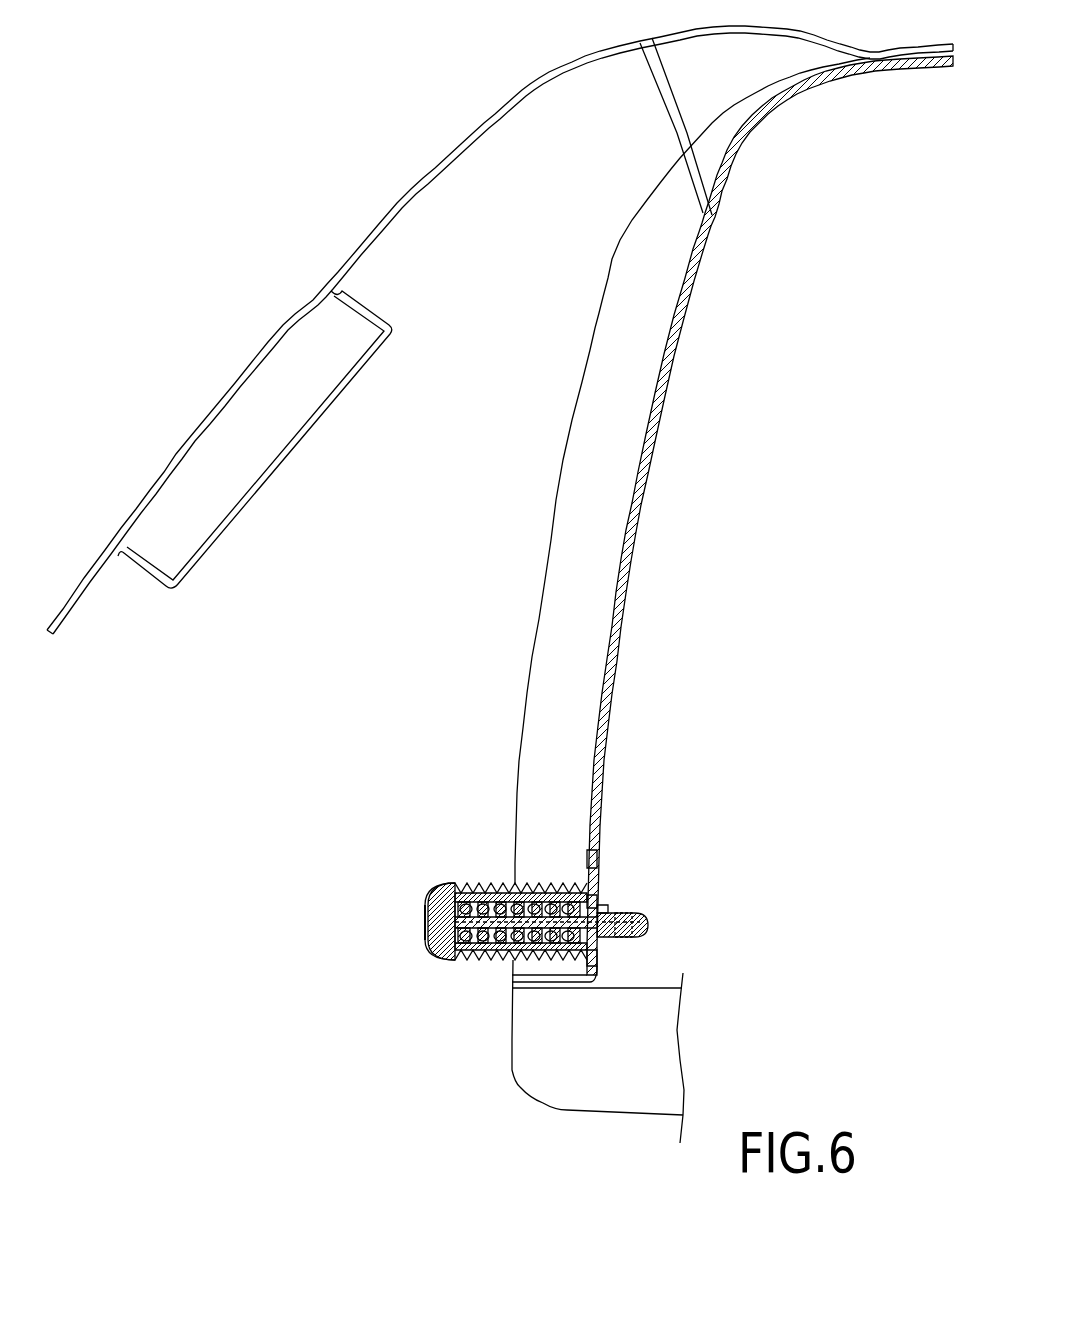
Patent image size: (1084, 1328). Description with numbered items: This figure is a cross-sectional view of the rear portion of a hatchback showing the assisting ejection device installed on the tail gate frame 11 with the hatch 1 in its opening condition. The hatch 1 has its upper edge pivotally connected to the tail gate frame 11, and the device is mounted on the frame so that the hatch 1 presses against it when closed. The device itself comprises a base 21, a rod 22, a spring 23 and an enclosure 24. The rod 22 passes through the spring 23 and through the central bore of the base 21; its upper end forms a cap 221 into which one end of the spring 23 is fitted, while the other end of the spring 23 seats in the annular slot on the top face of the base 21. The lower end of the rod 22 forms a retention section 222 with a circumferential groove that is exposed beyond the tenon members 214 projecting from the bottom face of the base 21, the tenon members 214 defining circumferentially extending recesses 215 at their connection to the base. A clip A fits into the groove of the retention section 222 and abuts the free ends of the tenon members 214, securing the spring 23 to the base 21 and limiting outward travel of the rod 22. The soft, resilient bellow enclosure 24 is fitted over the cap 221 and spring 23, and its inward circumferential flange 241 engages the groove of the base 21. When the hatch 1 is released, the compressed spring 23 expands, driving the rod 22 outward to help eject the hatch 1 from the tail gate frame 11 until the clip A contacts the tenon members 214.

The hatch 1 is at (190, 438).
The tail gate frame 11 is at (638, 513).
The base 21 is at (599, 962).
The rod 22 is at (502, 950).
The spring 23 is at (467, 950).
The enclosure 24 is at (428, 890).
The tenon members 214 is at (615, 908).
The recesses 215 is at (597, 903).
The cap 221 is at (425, 927).
The retention section 222 is at (640, 930).
The circumferential flange 241 is at (597, 858).
The clip A is at (633, 917).